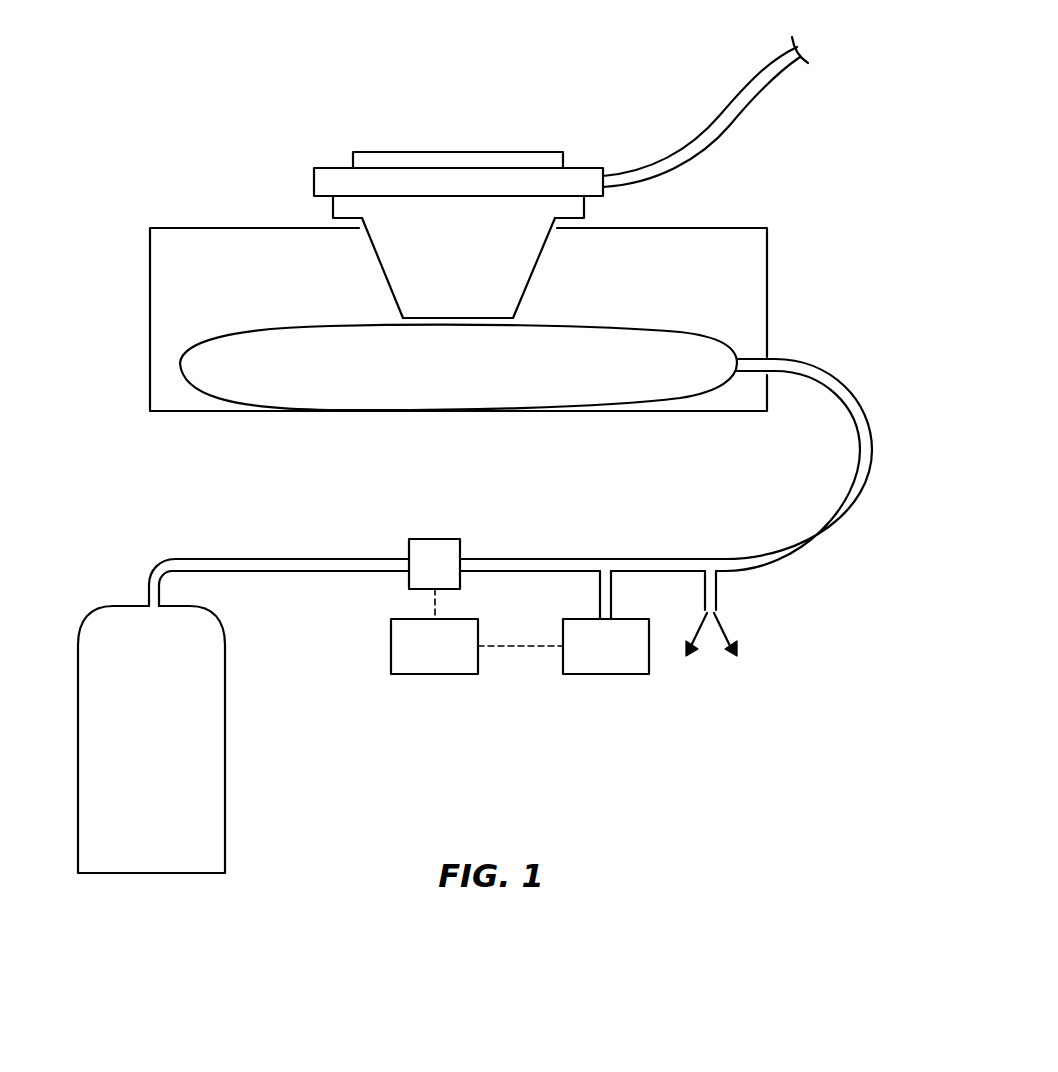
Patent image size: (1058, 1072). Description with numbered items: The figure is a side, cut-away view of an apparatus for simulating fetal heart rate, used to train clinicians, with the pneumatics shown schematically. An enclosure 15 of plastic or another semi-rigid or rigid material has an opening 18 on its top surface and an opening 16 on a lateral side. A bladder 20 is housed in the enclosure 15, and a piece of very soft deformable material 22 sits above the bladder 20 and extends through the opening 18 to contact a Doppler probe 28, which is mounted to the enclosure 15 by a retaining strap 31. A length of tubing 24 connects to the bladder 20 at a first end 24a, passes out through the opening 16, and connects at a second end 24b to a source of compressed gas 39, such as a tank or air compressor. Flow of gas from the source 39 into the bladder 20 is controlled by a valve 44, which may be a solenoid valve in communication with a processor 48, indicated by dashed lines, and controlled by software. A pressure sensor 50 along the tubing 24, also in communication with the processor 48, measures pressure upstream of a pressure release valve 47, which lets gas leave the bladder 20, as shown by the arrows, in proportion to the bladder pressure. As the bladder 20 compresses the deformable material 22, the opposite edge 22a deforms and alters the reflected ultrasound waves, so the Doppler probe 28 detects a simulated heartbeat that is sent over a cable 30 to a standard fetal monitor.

The enclosure 15 is at (150, 253).
The opening 16 is at (770, 373).
The opening 18 is at (553, 227).
The bladder 20 is at (220, 363).
The deformable material 22 is at (423, 257).
The opposite edge of the deformable material 22a is at (513, 318).
The length of tubing 24 is at (872, 447).
The first end 24a is at (786, 354).
The second end 24b is at (183, 559).
The Doppler probe 28 is at (333, 181).
The cable 30 is at (753, 83).
The retaining strap 31 is at (481, 152).
The source of compressed gas 39 is at (162, 746).
The valve 44 is at (447, 582).
The pressure release valve 47 is at (718, 589).
The processor 48 is at (447, 658).
The pressure sensor 50 is at (619, 658).